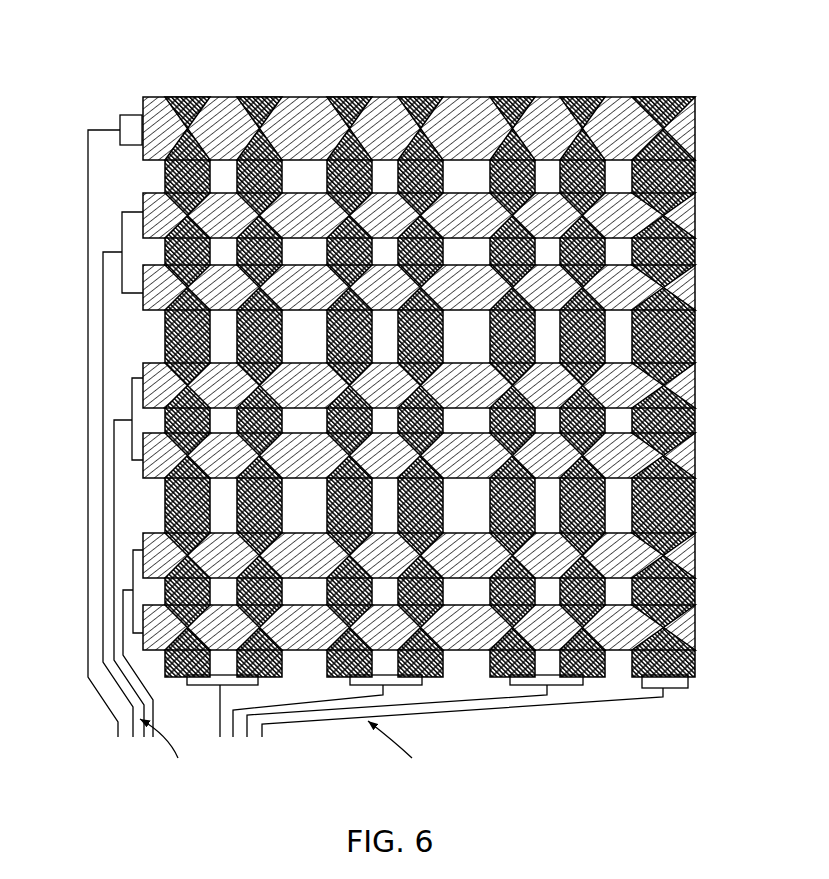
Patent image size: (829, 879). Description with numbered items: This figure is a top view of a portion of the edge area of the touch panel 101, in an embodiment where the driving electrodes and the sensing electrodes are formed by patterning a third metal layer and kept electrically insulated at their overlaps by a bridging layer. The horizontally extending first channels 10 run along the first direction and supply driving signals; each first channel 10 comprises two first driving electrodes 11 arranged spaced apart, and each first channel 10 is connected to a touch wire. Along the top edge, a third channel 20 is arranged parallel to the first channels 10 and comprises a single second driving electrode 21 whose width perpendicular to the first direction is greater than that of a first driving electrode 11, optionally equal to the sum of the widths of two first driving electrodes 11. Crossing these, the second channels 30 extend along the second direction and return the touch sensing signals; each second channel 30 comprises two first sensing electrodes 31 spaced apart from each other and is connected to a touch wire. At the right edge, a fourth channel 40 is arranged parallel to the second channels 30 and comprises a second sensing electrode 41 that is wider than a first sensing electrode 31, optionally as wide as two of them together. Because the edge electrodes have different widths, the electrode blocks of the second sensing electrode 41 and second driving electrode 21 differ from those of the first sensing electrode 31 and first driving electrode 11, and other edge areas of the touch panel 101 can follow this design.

The touch panel 101 is at (217, 50).
The first channel 10 is at (118, 231).
The first driving electrode 11 is at (150, 305).
The third channel 20 is at (119, 123).
The second driving electrode 21 is at (151, 124).
The second channel 30 is at (564, 692).
The first sensing electrode 31 is at (498, 676).
The fourth channel 40 is at (677, 698).
The second sensing electrode 41 is at (694, 676).